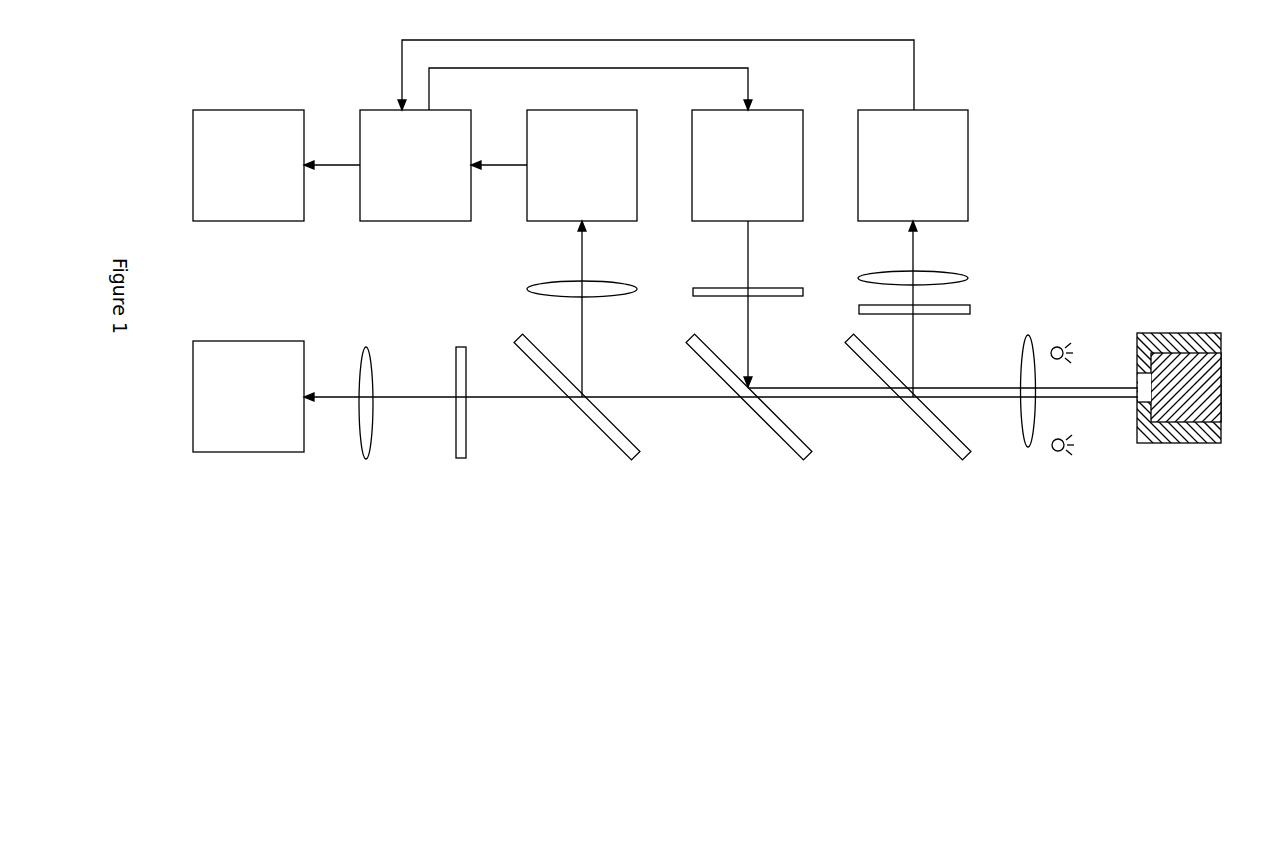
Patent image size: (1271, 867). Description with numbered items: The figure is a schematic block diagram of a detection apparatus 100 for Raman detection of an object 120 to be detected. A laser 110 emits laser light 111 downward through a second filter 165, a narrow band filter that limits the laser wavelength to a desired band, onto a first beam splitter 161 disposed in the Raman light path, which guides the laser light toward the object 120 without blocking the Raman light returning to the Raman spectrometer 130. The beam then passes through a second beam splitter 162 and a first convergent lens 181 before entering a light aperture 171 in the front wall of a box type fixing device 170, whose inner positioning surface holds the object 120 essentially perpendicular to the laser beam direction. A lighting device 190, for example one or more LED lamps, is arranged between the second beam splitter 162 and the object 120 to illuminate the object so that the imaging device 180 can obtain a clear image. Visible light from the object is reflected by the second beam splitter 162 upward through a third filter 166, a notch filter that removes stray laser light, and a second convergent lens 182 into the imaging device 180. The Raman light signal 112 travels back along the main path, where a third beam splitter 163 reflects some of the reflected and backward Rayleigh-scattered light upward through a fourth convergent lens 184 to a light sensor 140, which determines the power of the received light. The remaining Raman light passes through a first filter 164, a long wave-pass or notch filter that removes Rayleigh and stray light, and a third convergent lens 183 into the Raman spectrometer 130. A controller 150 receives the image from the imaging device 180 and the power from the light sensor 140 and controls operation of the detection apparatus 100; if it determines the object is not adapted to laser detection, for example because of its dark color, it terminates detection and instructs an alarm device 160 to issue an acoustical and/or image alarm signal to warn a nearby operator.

The detection apparatus 100 is at (224, 43).
The laser 110 is at (747, 165).
The laser light 111 is at (748, 254).
The Raman light signal 112 is at (346, 397).
The object 120 is at (1202, 413).
The Raman spectrometer 130 is at (248, 396).
The light sensor 140 is at (582, 253).
The controller 150 is at (443, 165).
The alarm device 160 is at (276, 165).
The first beam splitter 161 is at (780, 440).
The second beam splitter 162 is at (943, 440).
The third beam splitter 163 is at (608, 437).
The first filter 164 is at (455, 458).
The second filter 165 is at (718, 288).
The third filter 166 is at (970, 310).
The fixing device 170 is at (1188, 332).
The light aperture 171 is at (1147, 402).
The imaging device 180 is at (913, 253).
The first convergent lens 181 is at (1027, 447).
The second convergent lens 182 is at (968, 278).
The third convergent lens 183 is at (366, 457).
The fourth convergent lens 184 is at (527, 290).
The lighting device 190 is at (1059, 452).